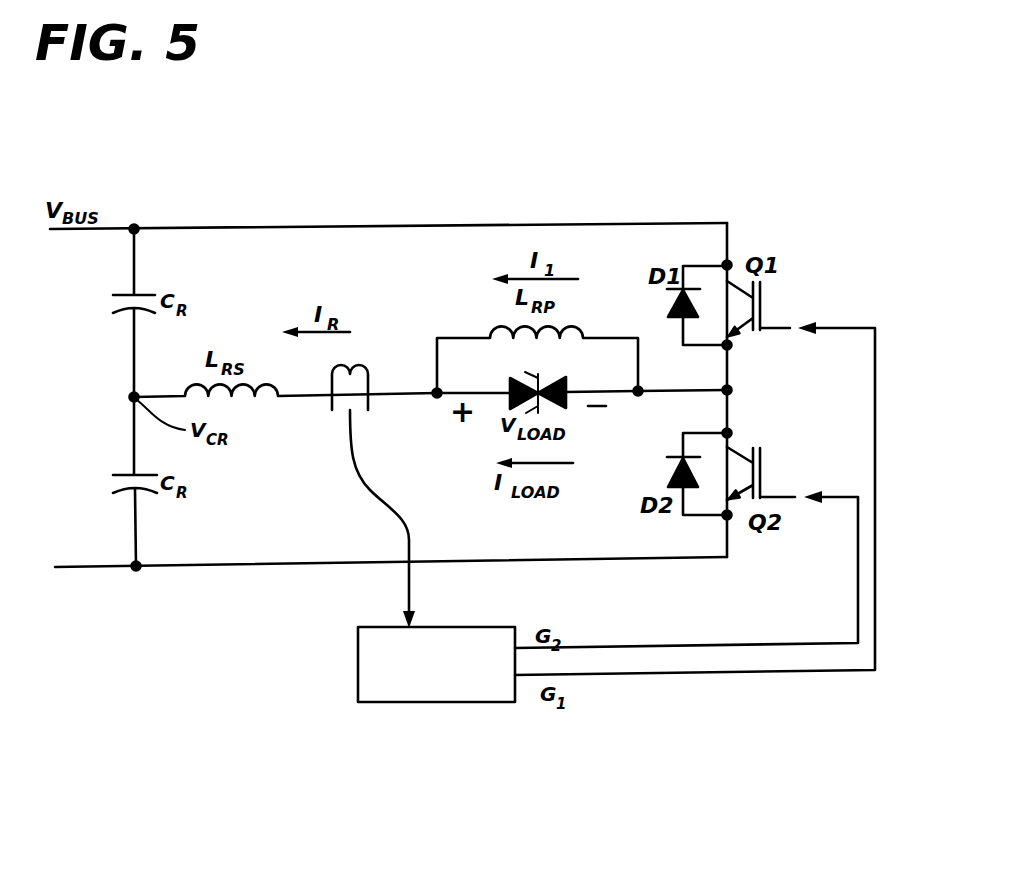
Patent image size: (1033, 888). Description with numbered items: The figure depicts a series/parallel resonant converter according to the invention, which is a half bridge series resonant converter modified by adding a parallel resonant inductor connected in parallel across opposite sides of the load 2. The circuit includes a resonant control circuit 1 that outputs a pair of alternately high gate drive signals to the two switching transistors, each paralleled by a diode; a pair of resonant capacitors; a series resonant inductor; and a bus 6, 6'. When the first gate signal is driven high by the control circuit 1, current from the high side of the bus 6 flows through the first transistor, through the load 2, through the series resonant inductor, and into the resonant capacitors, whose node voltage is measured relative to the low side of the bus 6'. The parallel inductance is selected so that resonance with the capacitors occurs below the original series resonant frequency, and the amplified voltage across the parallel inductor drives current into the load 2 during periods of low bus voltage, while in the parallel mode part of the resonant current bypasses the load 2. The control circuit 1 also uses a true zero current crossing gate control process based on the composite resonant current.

The control circuit 1 is at (358, 660).
The load 2 is at (548, 371).
The bus 6 is at (388, 190).
The bus 6' is at (391, 607).